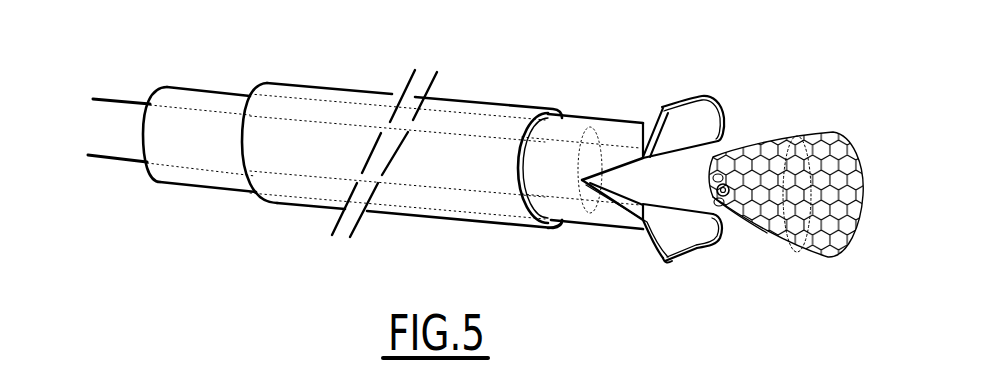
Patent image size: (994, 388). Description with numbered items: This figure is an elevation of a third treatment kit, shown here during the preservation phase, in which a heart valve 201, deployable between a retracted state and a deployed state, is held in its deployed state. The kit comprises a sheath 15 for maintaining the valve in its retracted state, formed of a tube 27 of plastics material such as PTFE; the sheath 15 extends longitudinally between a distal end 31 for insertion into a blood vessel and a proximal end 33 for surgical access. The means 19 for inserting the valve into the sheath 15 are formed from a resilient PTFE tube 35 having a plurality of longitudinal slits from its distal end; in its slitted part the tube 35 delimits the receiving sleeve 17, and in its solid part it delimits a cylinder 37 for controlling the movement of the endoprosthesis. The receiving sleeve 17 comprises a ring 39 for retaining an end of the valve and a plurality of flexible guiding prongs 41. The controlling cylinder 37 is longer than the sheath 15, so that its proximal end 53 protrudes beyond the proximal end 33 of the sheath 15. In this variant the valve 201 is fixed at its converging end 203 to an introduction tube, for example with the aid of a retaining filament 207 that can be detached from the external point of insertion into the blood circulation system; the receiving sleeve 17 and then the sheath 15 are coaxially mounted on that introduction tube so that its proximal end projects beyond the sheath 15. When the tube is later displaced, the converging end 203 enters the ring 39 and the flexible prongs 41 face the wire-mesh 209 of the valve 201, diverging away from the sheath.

The sheath 15 is at (365, 92).
The receiving sleeve 17 is at (580, 120).
The means for inserting the endoprosthesis into the sheath 19 is at (448, 107).
The tube 27 is at (483, 100).
The distal end 31 is at (543, 227).
The proximal end 33 is at (250, 108).
The resilient tube 35 is at (568, 117).
The cylinder for controlling the movement of the endoprosthesis 37 is at (212, 178).
The ring 39 is at (607, 128).
The flexible guiding prongs 41 is at (615, 215).
The proximal end 53 is at (152, 93).
The heart valve 201 is at (808, 127).
The converging end 203 is at (742, 145).
The retaining filament 207 is at (730, 218).
The wire-mesh 209 is at (777, 236).